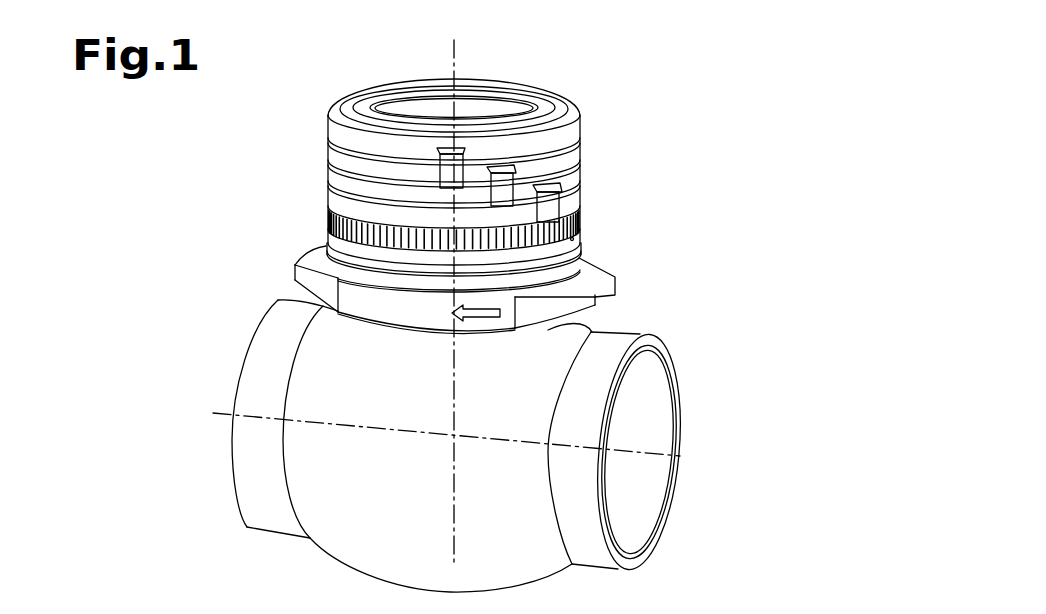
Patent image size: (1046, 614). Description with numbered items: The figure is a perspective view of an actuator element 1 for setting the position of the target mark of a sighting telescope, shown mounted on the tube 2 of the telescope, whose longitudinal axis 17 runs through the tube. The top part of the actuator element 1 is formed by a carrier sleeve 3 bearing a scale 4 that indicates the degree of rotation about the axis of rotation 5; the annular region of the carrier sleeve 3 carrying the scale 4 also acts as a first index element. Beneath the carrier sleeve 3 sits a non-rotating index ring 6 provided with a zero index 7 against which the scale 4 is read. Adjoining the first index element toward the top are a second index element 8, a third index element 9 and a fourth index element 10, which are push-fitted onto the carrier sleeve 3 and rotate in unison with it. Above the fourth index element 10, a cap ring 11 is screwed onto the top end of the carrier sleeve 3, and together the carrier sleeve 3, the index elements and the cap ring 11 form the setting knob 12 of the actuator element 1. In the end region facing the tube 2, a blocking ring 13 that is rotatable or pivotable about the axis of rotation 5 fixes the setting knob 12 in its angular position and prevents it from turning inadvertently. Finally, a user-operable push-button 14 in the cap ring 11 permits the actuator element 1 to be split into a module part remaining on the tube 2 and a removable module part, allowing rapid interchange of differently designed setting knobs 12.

The actuator element 1 is at (168, 140).
The tube 2 is at (625, 318).
The carrier sleeve 3 is at (318, 208).
The scale 4 is at (327, 253).
The axis of rotation 5 is at (453, 63).
The index ring 6 is at (590, 250).
The zero index 7 is at (590, 222).
The second index element 8 is at (590, 184).
The third index element 9 is at (590, 165).
The fourth index element 10 is at (590, 137).
The cap ring 11 is at (576, 92).
The setting knob 12 is at (307, 138).
The blocking ring 13 is at (347, 334).
The push-button 14 is at (486, 120).
The longitudinal axis 17 is at (688, 458).